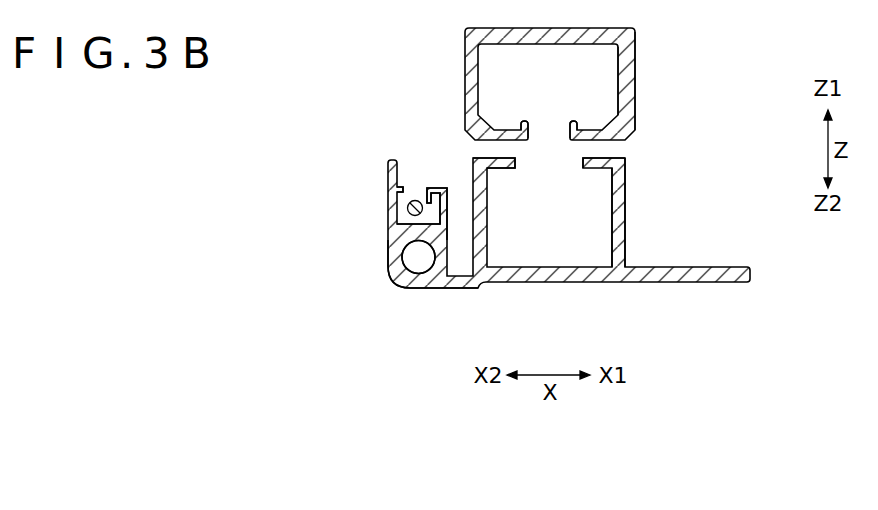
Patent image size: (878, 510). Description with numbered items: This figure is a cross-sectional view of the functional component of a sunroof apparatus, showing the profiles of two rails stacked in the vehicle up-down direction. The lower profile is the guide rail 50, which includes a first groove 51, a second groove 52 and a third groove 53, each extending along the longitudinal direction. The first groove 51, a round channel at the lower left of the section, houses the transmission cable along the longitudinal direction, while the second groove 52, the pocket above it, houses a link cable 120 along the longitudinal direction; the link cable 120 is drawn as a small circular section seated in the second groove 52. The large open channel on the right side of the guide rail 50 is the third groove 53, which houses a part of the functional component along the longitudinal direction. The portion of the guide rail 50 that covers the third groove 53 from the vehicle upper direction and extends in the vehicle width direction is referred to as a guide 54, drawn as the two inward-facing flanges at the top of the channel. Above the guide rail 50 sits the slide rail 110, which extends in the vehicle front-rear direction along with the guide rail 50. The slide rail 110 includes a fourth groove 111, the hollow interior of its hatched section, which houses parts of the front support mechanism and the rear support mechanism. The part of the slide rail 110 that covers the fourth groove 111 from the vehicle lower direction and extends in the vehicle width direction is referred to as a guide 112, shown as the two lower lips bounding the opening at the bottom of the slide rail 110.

The slide rail 110 is at (633, 53).
The fourth groove 111 is at (622, 89).
The guide 112 is at (573, 122).
The link cable 120 is at (411, 197).
The guide rail 50 is at (682, 293).
The first groove 51 is at (414, 263).
The second groove 52 is at (401, 211).
The third groove 53 is at (614, 213).
The guide 54 is at (590, 170).